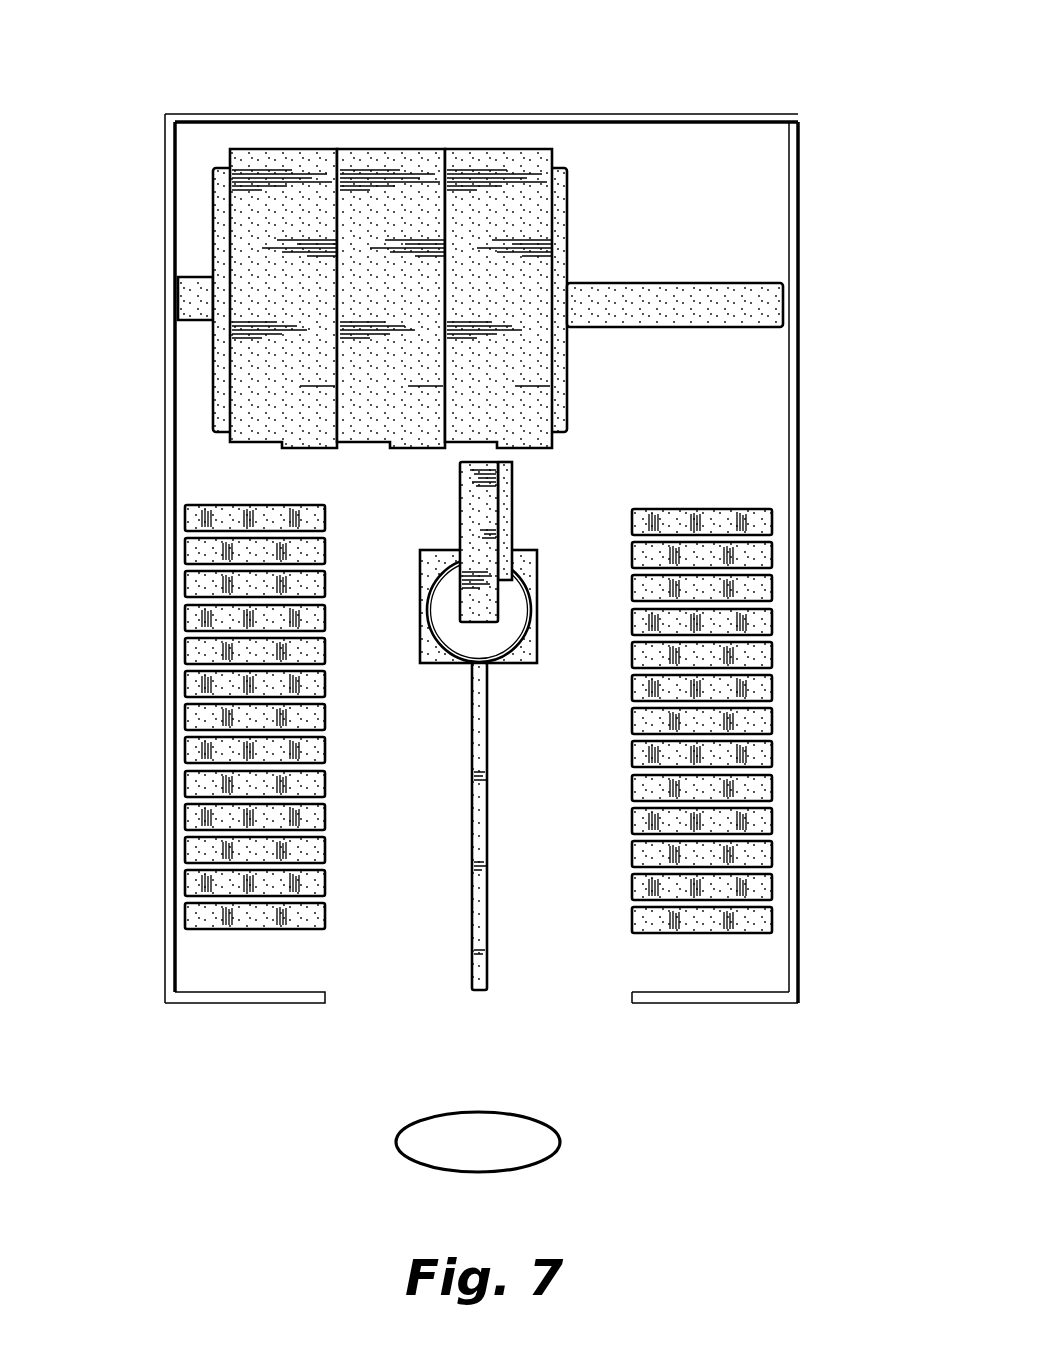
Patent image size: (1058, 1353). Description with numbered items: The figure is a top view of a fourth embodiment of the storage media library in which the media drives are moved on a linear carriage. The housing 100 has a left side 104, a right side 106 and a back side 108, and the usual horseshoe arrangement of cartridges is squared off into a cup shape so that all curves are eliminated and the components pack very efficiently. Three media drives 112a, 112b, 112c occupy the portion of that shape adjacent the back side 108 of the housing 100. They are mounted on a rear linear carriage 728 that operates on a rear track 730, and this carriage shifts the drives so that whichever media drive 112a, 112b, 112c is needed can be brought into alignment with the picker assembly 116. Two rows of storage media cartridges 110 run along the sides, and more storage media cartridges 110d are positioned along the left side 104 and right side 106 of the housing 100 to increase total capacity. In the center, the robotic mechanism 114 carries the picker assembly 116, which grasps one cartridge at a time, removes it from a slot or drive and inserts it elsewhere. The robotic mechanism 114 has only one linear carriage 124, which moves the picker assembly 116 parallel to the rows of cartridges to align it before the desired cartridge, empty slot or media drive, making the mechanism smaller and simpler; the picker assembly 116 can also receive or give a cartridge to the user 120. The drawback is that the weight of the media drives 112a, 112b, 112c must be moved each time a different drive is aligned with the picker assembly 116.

The housing 100 is at (486, 501).
The left side 104 is at (165, 357).
The right side 106 is at (805, 332).
The back side 108 is at (630, 114).
The storage media cartridges 110 is at (148, 610).
The storage media cartridges 110d is at (148, 503).
The media drive 112a is at (277, 155).
The media drive 112b is at (393, 155).
The media drive 112c is at (507, 155).
The robotic mechanism 114 is at (428, 685).
The picker assembly 116 is at (462, 510).
The user 120 is at (560, 1142).
The linear carriage 124 is at (528, 665).
The rear linear carriage 728 is at (567, 400).
The rear track 730 is at (688, 330).